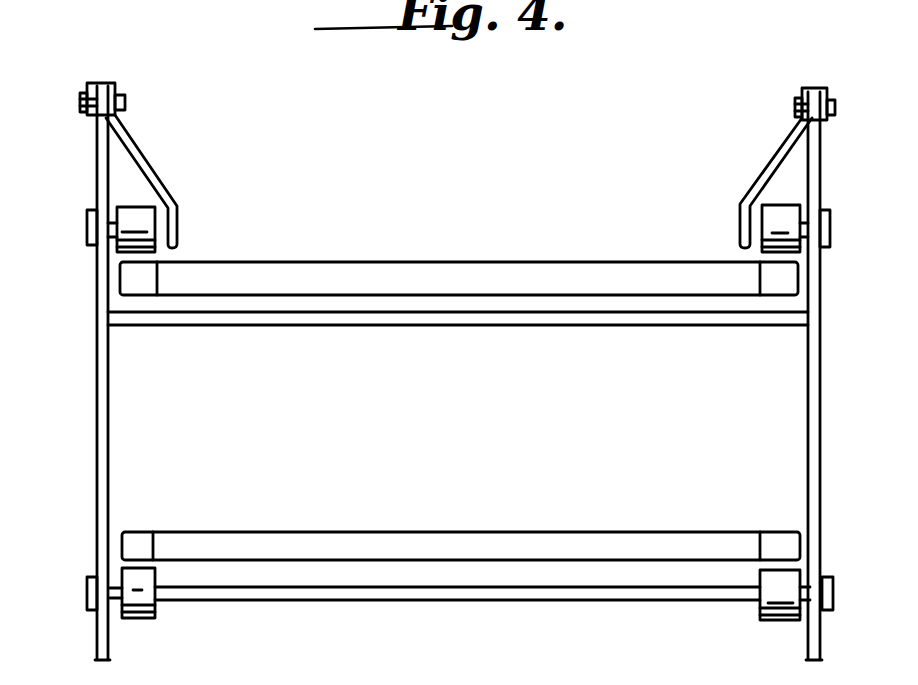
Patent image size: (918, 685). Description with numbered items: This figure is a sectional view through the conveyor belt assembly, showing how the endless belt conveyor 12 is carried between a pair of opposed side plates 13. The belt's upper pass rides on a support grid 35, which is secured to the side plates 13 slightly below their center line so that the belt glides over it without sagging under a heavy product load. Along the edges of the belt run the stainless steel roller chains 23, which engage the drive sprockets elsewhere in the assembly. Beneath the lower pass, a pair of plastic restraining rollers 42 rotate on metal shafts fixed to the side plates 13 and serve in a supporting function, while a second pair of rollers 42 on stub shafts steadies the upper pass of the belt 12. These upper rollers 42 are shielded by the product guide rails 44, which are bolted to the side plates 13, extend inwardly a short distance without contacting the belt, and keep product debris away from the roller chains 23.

The endless belt conveyor 12 is at (228, 262).
The side plates 13 is at (107, 448).
The roller chains 23 is at (145, 273).
The support grid 35 is at (168, 322).
The restraining rollers 42 is at (130, 207).
The product guide rails 44 is at (135, 150).